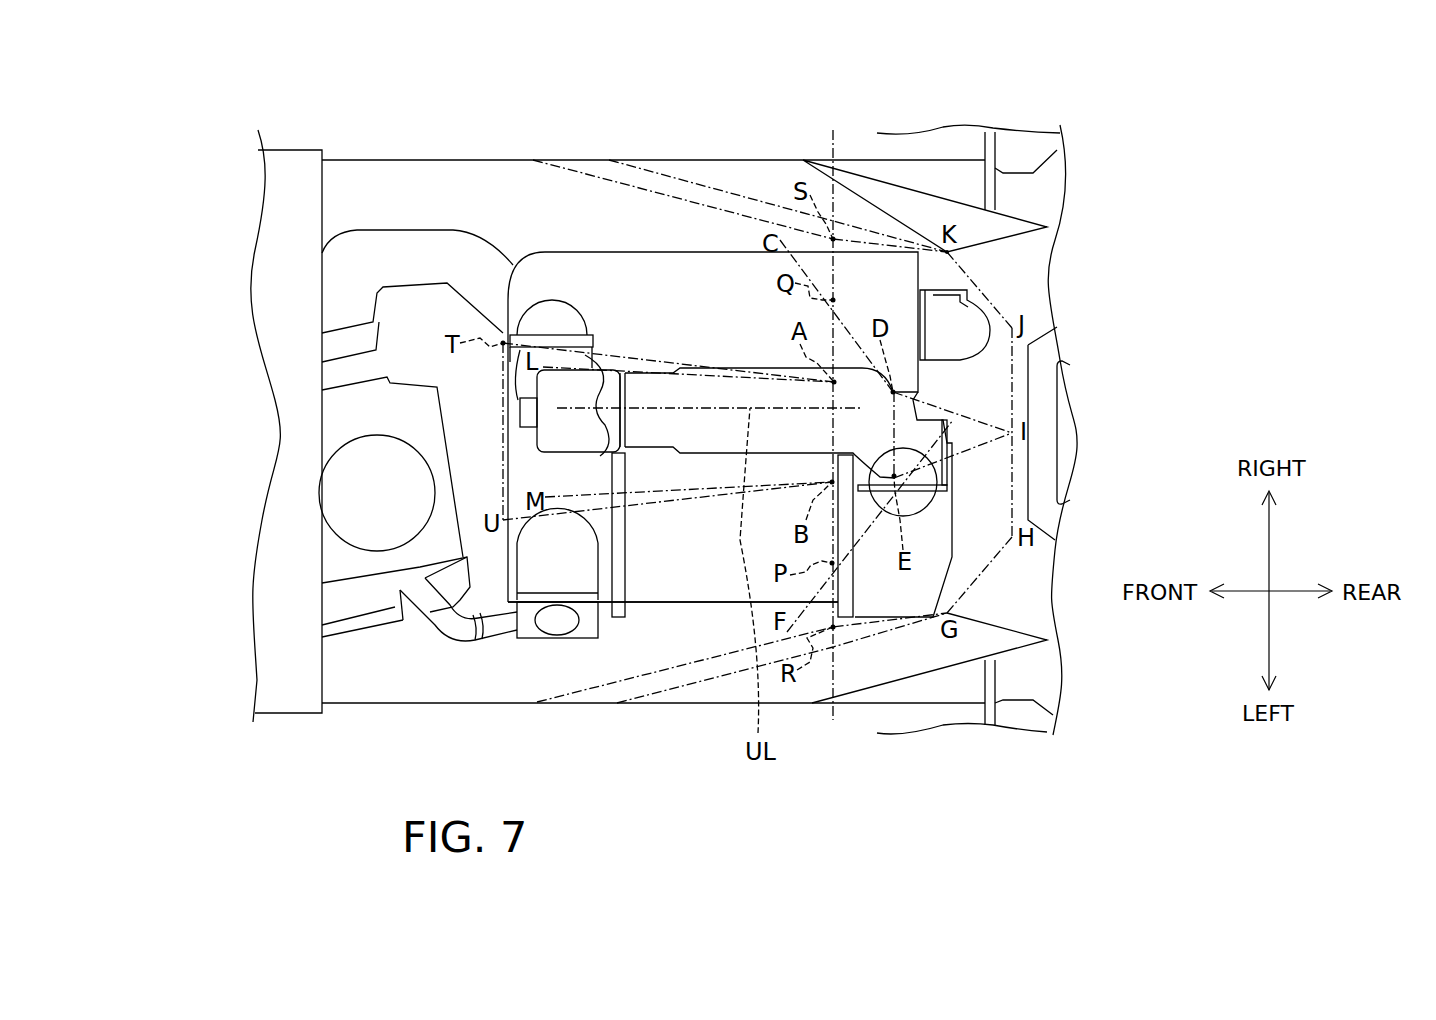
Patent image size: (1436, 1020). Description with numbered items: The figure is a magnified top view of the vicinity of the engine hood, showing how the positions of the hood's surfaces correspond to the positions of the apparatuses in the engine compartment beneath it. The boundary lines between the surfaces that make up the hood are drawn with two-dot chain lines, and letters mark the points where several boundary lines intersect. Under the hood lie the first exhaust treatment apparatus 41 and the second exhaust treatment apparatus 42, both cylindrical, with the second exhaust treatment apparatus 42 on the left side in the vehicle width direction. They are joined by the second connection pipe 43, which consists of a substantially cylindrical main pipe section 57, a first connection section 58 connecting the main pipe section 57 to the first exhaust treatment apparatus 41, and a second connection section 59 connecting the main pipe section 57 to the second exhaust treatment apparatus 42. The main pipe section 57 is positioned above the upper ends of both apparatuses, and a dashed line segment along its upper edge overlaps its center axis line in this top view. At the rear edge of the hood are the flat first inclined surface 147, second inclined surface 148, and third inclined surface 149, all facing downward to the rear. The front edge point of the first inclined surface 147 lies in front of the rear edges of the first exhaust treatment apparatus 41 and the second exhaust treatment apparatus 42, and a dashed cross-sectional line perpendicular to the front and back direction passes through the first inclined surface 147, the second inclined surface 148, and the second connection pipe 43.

The first exhaust treatment apparatus 41 is at (553, 273).
The second exhaust treatment apparatus 42 is at (673, 552).
The second connection pipe 43 is at (878, 78).
The main pipe section 57 is at (718, 420).
The first connection section 58 is at (600, 417).
The second connection section 59 is at (913, 433).
The first inclined surface 147 is at (990, 510).
The second inclined surface 148 is at (990, 377).
The third inclined surface 149 is at (968, 425).